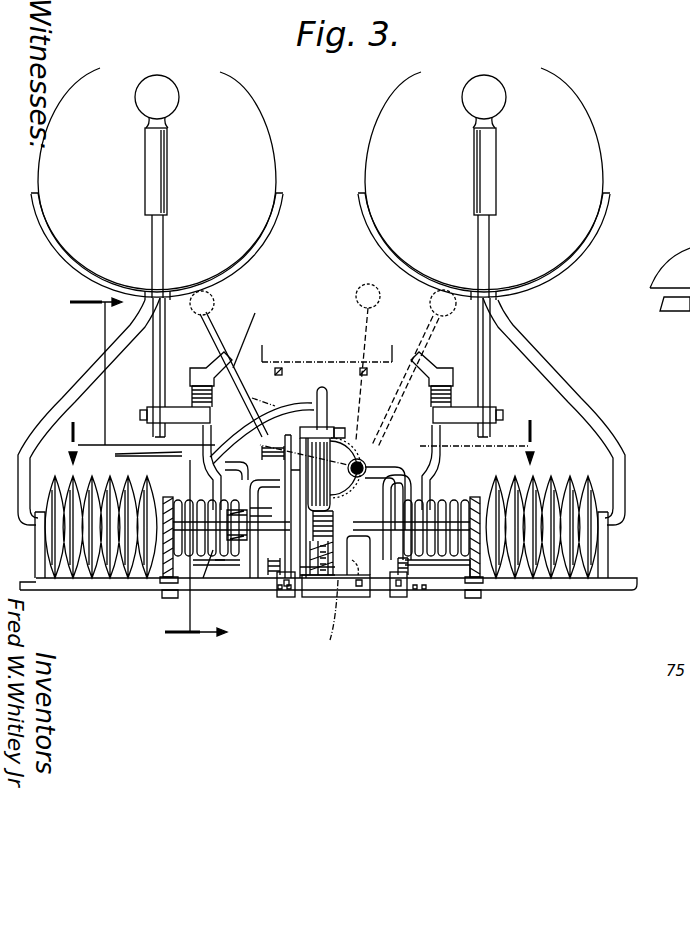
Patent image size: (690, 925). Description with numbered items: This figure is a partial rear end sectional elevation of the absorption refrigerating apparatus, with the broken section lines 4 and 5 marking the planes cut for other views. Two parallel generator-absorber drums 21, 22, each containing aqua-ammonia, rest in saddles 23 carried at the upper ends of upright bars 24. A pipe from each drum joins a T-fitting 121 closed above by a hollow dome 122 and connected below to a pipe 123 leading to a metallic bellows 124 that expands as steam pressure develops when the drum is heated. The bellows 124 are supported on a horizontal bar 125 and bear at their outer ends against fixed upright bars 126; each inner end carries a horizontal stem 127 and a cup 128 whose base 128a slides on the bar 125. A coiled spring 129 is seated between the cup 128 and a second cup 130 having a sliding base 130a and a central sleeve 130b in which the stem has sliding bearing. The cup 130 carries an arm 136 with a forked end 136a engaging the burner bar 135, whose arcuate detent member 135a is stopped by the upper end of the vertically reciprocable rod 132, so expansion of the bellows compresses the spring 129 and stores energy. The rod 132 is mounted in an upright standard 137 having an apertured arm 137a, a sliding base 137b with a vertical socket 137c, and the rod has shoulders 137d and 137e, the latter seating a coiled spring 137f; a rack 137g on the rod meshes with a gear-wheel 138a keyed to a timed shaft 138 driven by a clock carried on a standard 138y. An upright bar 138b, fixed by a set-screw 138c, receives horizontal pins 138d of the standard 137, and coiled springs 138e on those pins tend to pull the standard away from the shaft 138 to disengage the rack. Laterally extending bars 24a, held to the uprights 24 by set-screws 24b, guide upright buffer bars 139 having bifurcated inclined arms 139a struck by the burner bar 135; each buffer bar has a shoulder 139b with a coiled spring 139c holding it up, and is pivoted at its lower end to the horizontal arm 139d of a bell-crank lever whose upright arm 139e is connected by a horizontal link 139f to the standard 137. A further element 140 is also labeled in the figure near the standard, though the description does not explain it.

The section line 4- 4 is at (136, 479).
The section line 5- 5 is at (299, 442).
The generator-absorber drum 21 is at (157, 180).
The generator-absorber drum 22 is at (484, 180).
The saddle 23 is at (261, 228).
The upright bar 24 is at (160, 330).
The laterally extending bar 24a is at (175, 414).
The set-screw 24b is at (140, 415).
The T-fitting 121 is at (150, 158).
The hollow dome or ball 122 is at (517, 99).
The pipe 123 is at (152, 238).
The metallic bellows 124 is at (90, 588).
The horizontal bar 125 is at (90, 592).
The fixed upright bar 126 is at (36, 552).
The horizontal stem 127 is at (160, 528).
The collar or cup 128 is at (165, 568).
The cup base 128a is at (166, 588).
The coiled spring 129 is at (190, 500).
The spring retaining cup 130 is at (280, 597).
The cup base 130a is at (272, 598).
The sleeve 130b is at (480, 503).
The vertically reciprocable rod 132 is at (323, 388).
The burner bar 135 is at (208, 316).
The arcuate detent member 135a is at (148, 463).
The arm 136 is at (452, 492).
The forked end 136a is at (258, 511).
The upright standard 137 is at (308, 428).
The apertured arm 137a is at (330, 430).
The base 137b is at (310, 598).
The vertical socket 137c is at (356, 600).
The shoulder 137d is at (335, 436).
The shoulder 137e is at (334, 512).
The coiled spring 137f is at (334, 528).
The rack 137g is at (363, 462).
The timed shaft 138 is at (380, 472).
The gear-wheel 138a is at (372, 462).
The upright bar 138b is at (246, 418).
The set-screw 138c is at (290, 600).
The horizontal pins 138d is at (285, 352).
The coiled springs 138e is at (285, 683).
The clock standard 138y is at (360, 600).
The buffer bar 139 is at (454, 474).
The bifurcated inclined arm 139a is at (440, 340).
The shoulder 139b is at (190, 368).
The coiled spring 139c is at (190, 395).
The horizontal arm 139d is at (230, 597).
The upright arm 139e is at (180, 605).
The horizontal link 139f is at (489, 470).
The stop line 140 is at (384, 362).